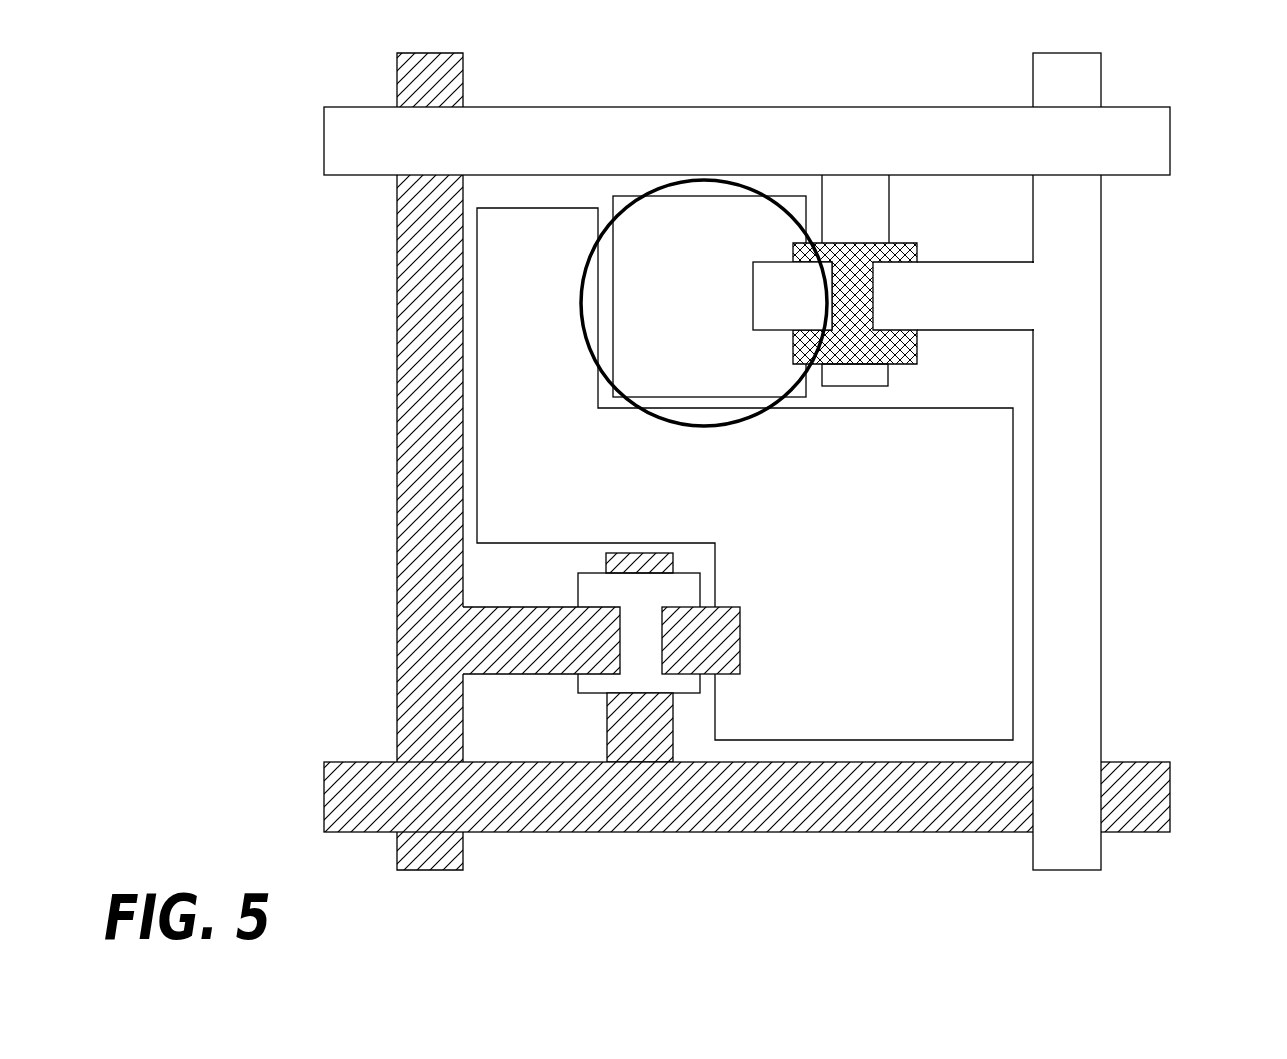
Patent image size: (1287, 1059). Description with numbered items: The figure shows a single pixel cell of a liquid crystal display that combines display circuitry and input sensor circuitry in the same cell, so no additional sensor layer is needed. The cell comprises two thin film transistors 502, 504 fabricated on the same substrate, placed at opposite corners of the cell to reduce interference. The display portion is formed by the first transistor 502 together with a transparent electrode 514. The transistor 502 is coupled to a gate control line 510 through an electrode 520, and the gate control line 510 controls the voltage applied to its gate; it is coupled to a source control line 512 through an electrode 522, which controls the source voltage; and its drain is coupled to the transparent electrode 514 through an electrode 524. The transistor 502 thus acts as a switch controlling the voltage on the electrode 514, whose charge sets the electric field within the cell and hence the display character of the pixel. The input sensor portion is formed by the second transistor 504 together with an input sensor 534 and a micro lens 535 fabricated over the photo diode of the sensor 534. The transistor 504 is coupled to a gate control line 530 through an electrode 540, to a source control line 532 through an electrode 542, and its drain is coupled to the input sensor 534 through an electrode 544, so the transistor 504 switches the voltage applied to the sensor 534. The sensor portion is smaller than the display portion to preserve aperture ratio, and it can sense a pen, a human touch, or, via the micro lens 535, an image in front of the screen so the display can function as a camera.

The thin film transistor 502 is at (692, 583).
The thin film transistor 504 is at (917, 360).
The gate control line 510 is at (1163, 787).
The source control line 512 is at (397, 610).
The transparent electrode 514 is at (531, 475).
The electrode 520 is at (660, 742).
The electrode 522 is at (547, 663).
The electrode 524 is at (730, 650).
The gate control line 530 is at (1160, 165).
The source control line 532 is at (1095, 69).
The input sensor 534 is at (703, 393).
The micro lens 535 is at (705, 178).
The electrode 540 is at (875, 200).
The electrode 542 is at (955, 322).
The electrode 544 is at (787, 322).